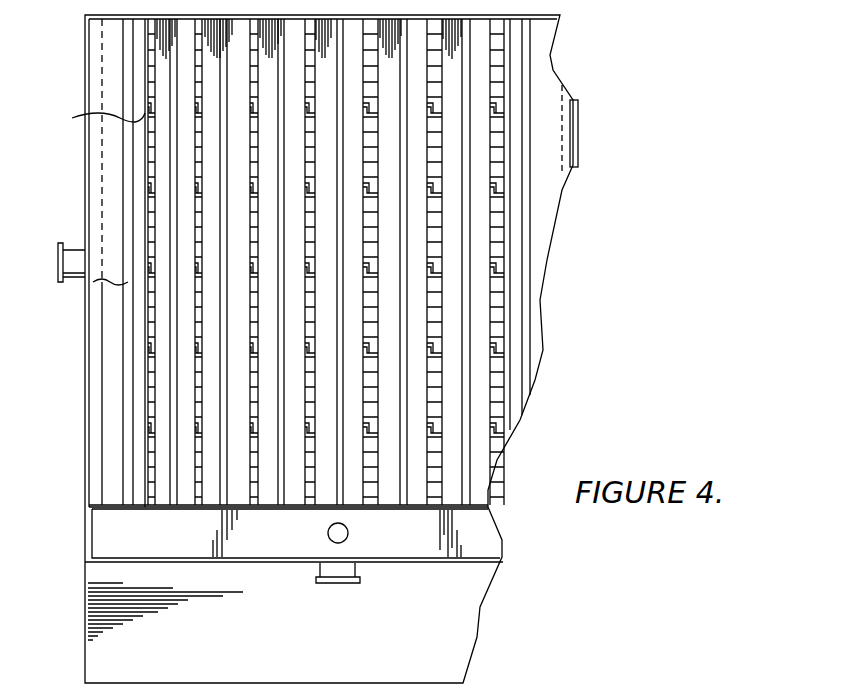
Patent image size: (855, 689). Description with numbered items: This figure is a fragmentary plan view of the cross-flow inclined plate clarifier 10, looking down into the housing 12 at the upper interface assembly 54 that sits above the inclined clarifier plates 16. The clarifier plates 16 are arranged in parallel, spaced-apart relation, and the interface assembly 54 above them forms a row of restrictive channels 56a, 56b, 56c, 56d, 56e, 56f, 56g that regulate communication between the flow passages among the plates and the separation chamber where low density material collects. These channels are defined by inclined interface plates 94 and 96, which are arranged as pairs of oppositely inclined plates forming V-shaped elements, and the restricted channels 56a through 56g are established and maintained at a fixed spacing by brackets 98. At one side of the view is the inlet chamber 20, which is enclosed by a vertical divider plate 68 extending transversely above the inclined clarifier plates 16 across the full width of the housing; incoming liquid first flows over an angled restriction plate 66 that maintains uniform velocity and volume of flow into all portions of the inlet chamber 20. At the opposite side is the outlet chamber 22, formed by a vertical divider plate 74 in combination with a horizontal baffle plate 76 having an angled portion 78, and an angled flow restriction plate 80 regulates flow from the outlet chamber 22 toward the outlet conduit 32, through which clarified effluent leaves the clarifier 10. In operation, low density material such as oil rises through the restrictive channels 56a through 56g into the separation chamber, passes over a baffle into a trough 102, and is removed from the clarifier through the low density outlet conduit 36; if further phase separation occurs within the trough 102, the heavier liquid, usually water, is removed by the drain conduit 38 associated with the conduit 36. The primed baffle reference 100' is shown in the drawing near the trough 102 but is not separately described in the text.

The cross-flow inclined plate clarifier 10 is at (598, 72).
The housing 12 is at (85, 78).
The inclined clarifier plates 16 is at (440, 287).
The inlet chamber 20 is at (556, 145).
The outlet chamber 22 is at (103, 176).
The outlet conduit 32 is at (68, 248).
The low density outlet conduit 36 is at (322, 578).
The drain conduit 38 is at (348, 533).
The interface assembly 54 is at (178, 500).
The restrictive channel 56a is at (500, 232).
The restrictive channel 56b is at (440, 463).
The restrictive channel 56c is at (378, 486).
The restrictive channel 56d is at (308, 478).
The restrictive channel 56e is at (258, 470).
The restrictive channel 56f is at (200, 400).
The restrictive channel 56g is at (150, 452).
The angled restriction plate 66 is at (540, 198).
The vertical divider plate 68 is at (505, 63).
The vertical divider plate 74 is at (94, 150).
The horizontal baffle plate 76 is at (135, 352).
The angled portion 78 is at (110, 375).
The angled flow restriction plate 80 is at (135, 290).
The inclined interface plate 94 is at (185, 383).
The inclined interface plate 96 is at (160, 303).
The brackets 98 is at (246, 181).
The aperture 100' is at (378, 533).
The trough 102 is at (315, 553).